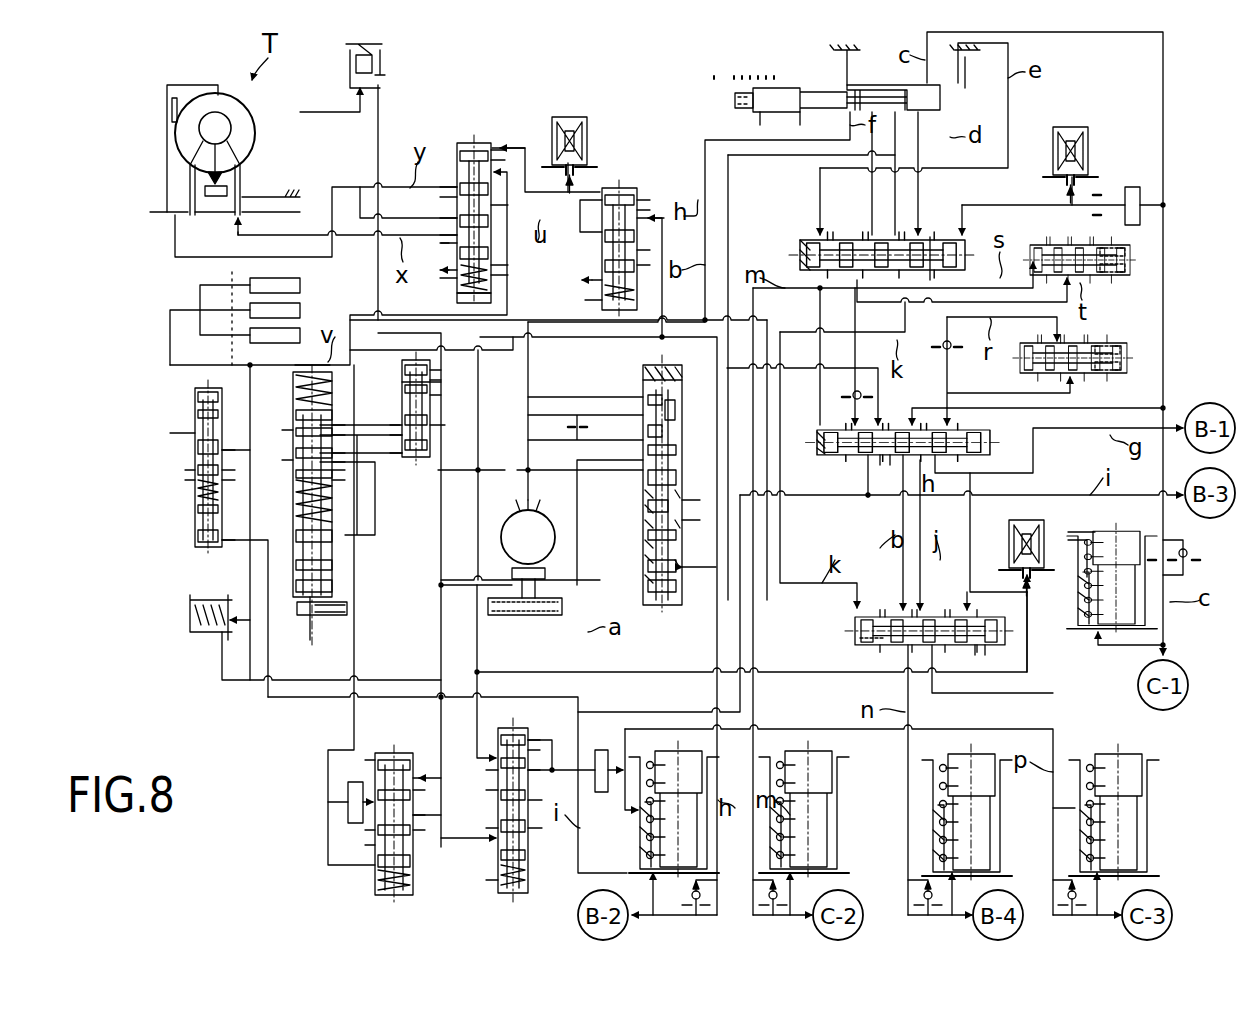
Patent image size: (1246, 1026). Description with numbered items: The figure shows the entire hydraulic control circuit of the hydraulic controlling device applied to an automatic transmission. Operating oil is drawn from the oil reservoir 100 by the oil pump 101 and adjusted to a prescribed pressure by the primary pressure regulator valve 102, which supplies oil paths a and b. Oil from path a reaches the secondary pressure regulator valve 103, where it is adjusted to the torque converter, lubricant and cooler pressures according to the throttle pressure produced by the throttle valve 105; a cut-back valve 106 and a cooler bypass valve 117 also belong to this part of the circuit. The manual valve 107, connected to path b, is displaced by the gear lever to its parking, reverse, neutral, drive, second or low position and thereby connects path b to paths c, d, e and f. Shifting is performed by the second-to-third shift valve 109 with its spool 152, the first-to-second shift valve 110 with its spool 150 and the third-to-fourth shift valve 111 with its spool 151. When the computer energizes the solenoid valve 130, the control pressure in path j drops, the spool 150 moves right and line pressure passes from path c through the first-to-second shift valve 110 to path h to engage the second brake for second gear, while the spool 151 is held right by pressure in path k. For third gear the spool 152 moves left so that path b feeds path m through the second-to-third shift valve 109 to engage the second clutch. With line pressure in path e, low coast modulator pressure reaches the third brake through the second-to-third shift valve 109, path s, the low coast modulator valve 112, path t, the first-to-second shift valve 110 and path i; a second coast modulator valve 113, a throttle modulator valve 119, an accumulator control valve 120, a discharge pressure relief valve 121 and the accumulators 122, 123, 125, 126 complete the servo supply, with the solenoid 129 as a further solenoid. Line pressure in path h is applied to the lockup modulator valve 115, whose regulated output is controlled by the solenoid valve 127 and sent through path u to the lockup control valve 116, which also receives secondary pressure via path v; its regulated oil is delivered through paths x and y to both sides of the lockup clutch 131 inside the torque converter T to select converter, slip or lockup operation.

The oil reservoir 100 is at (540, 616).
The oil pump 101 is at (540, 512).
The primary pressure regulator valve 102 is at (637, 545).
The secondary pressure regulator valve 103 is at (195, 538).
The throttle valve 105 is at (292, 455).
The cut-back valve 106 is at (432, 430).
The manual valve 107 is at (862, 82).
The 2-3 shift valve 109 is at (810, 240).
The 1-2 shift valve 110 is at (822, 458).
The 3-4 shift valve 111 is at (853, 632).
The low coast modulator valve 112 is at (1090, 275).
The second coast modulator valve 113 is at (1087, 373).
The lockup modulator valve 115 is at (620, 190).
The lockup control valve 116 is at (470, 143).
The cooler bypass valve 117 is at (382, 65).
The throttle modulator valve 119 is at (375, 890).
The accumulator control valve 120 is at (495, 888).
The discharge pressure relief valve 121 is at (205, 635).
The accumulator 122 is at (640, 845).
The accumulator 123 is at (840, 845).
The accumulator 125 is at (1000, 838).
The accumulator 126 is at (1158, 825).
The solenoid valve 127 is at (568, 117).
The solenoid 129 is at (1072, 127).
The solenoid valve 130 is at (1045, 525).
The lockup clutch 131 is at (168, 108).
The spool 150 is at (884, 457).
The spool 151 is at (975, 645).
The spool 152 is at (938, 238).